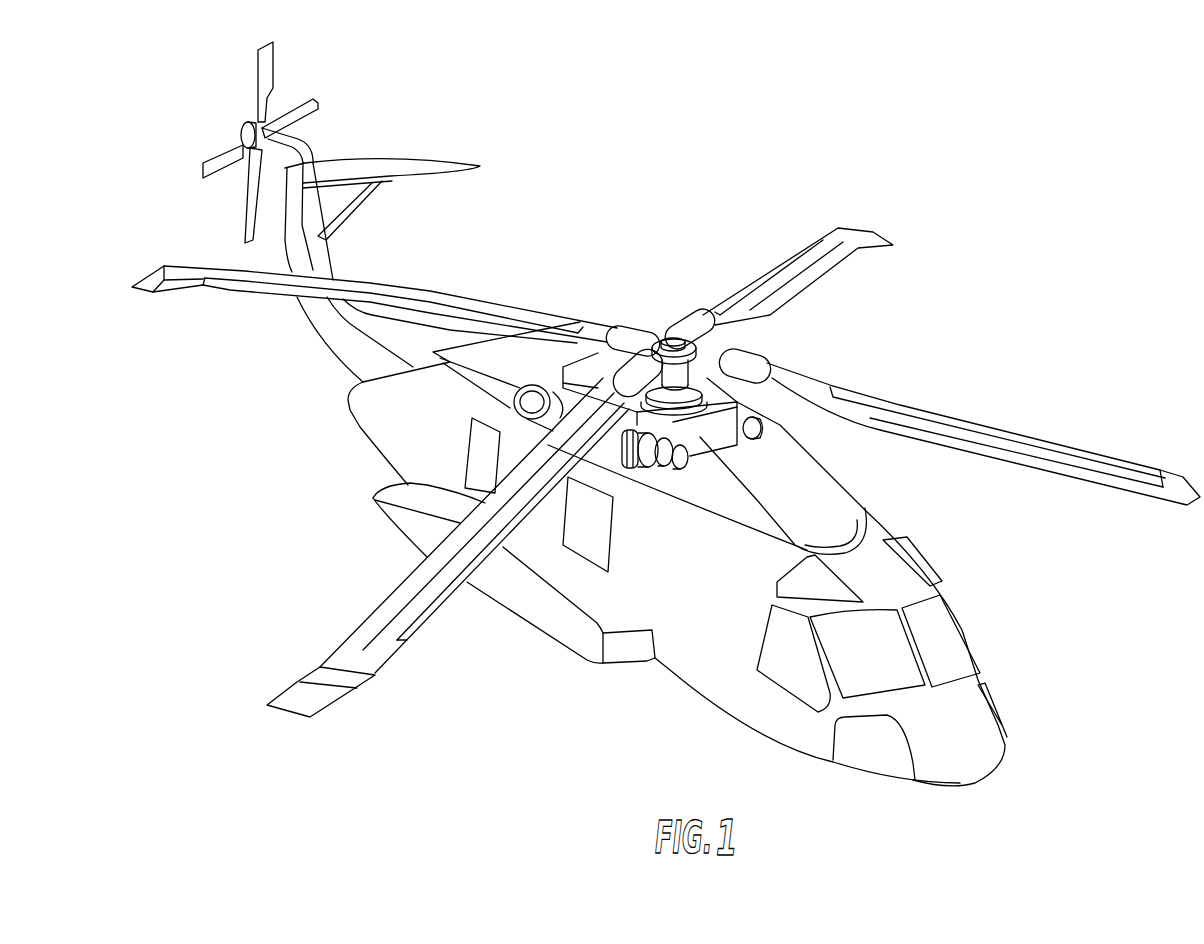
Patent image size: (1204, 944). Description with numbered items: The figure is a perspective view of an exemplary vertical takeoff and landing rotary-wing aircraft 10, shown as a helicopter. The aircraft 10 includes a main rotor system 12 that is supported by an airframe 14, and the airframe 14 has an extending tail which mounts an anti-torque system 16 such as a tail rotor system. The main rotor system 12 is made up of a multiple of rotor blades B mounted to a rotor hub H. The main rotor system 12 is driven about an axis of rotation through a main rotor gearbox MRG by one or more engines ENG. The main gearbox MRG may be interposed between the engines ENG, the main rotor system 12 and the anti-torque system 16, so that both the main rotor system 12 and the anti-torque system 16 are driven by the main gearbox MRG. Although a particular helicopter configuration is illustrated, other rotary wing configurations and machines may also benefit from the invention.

The rotary-wing aircraft 10 is at (666, 392).
The main rotor system 12 is at (666, 472).
The airframe 14 is at (677, 584).
The anti-torque system 16 is at (305, 142).
The rotor hub H is at (700, 352).
The rotor blades B is at (1007, 437).
The main rotor gearbox MRG is at (727, 453).
The engines ENG is at (612, 447).